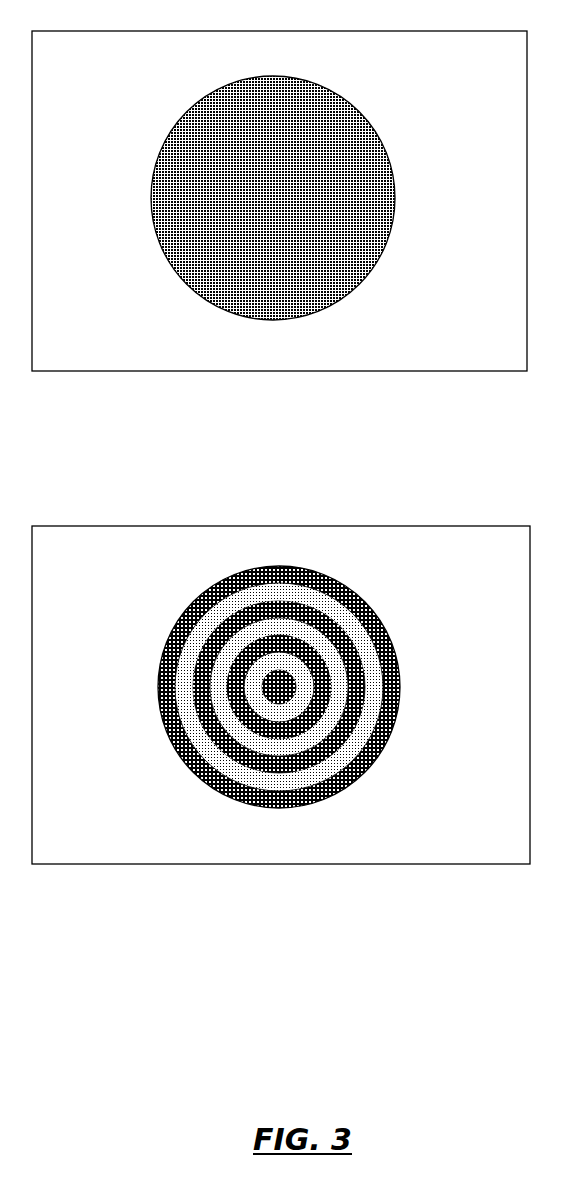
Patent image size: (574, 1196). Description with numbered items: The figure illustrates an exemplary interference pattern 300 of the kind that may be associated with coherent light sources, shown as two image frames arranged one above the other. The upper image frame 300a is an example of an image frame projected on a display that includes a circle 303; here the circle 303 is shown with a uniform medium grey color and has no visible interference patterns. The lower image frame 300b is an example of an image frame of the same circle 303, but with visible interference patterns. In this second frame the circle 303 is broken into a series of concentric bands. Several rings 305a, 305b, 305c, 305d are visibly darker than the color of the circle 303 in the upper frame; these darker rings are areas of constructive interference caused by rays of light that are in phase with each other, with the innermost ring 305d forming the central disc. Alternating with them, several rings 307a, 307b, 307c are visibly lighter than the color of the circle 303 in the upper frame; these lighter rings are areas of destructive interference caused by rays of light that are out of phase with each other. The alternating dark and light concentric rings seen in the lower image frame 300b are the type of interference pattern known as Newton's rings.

The cross-sectional views of a fiber 300 is at (320, 1008).
The image frame 300a is at (526, 417).
The image frame 300b is at (536, 906).
The circle 303 is at (156, 152).
The ring 305a is at (180, 632).
The ring 305b is at (198, 665).
The ring 305c is at (227, 683).
The ring 305d is at (272, 692).
The ring 307a is at (345, 610).
The ring 307b is at (338, 668).
The ring 307c is at (298, 707).